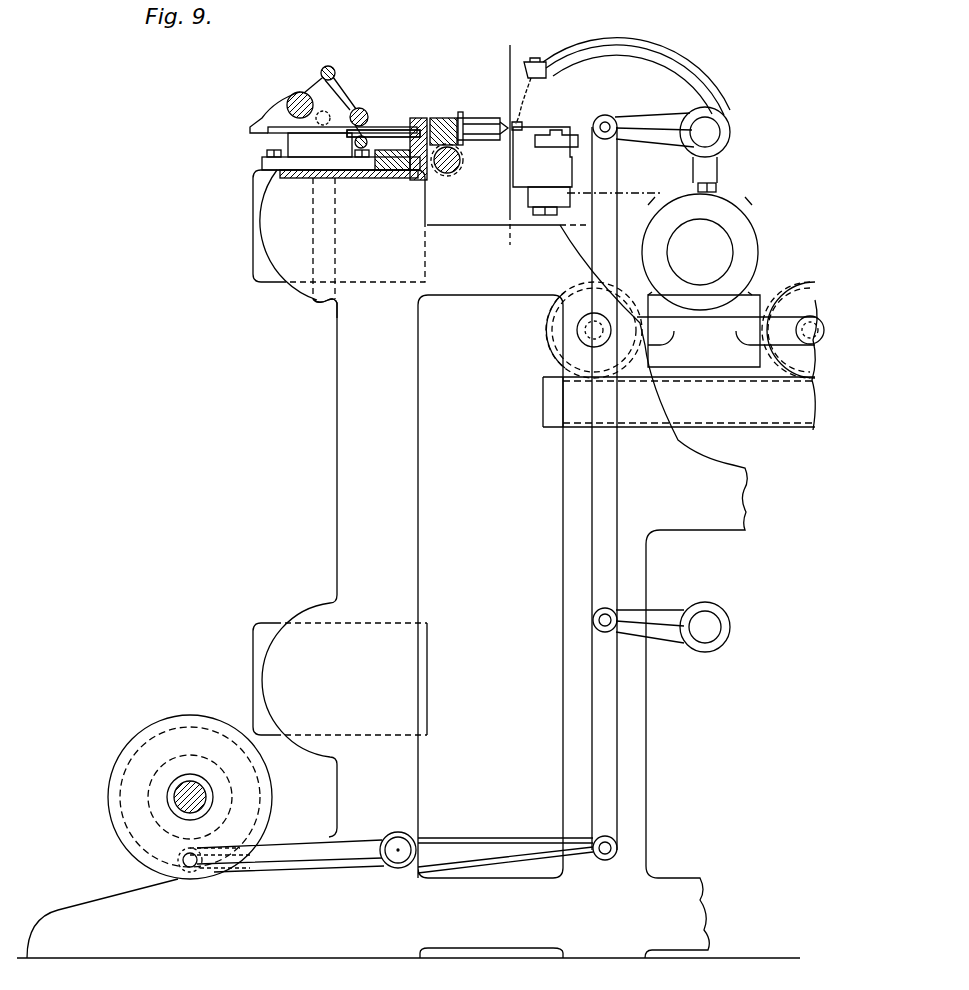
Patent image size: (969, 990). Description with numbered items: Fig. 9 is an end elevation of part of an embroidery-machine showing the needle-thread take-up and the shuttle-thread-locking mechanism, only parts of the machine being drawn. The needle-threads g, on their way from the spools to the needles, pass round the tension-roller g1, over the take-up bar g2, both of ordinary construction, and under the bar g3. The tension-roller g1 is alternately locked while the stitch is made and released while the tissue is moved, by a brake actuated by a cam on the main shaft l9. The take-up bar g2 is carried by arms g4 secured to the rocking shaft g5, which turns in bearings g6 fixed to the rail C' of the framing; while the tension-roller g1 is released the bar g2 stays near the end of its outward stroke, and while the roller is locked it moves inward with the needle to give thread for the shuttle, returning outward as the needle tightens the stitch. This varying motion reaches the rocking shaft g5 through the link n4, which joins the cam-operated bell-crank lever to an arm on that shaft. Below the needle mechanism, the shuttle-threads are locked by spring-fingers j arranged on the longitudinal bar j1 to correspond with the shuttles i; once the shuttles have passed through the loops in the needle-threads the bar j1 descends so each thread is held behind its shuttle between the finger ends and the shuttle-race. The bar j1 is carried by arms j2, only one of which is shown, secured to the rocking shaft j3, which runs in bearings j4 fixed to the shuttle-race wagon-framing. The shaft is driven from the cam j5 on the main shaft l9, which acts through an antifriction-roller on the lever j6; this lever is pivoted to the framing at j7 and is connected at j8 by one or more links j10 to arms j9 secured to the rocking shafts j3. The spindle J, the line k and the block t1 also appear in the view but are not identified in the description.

The needle-threads g is at (312, 88).
The tension-roller g1 is at (297, 93).
The take-up bar g2 is at (333, 70).
The bar g3 is at (368, 138).
The arms g4 is at (345, 95).
The rocking shaft g5 is at (366, 110).
The bearings g6 is at (368, 118).
The rail C' is at (323, 452).
The link n4 is at (320, 306).
The spindle J is at (503, 125).
The guide line k is at (508, 65).
The longitudinal bar j1 is at (537, 78).
The spring-fingers j is at (518, 120).
The shuttles i is at (524, 128).
The holder block t1 is at (523, 160).
The arms j2 is at (632, 42).
The rocking shaft j3 is at (705, 379).
The arms j9 is at (656, 136).
The bearings j4 is at (718, 165).
The links j10 is at (619, 477).
The cam j5 is at (110, 795).
The main shaft l9 is at (205, 800).
The lever j6 is at (306, 870).
The pivot j7 is at (398, 860).
The connection point j8 is at (605, 856).